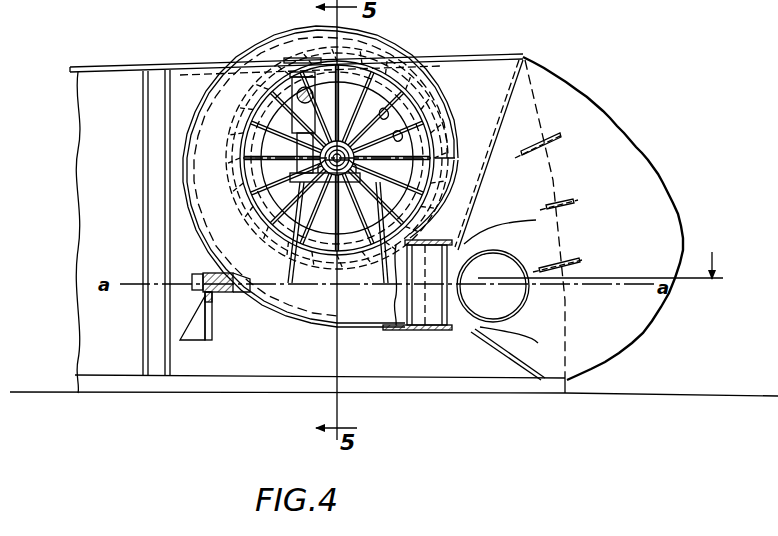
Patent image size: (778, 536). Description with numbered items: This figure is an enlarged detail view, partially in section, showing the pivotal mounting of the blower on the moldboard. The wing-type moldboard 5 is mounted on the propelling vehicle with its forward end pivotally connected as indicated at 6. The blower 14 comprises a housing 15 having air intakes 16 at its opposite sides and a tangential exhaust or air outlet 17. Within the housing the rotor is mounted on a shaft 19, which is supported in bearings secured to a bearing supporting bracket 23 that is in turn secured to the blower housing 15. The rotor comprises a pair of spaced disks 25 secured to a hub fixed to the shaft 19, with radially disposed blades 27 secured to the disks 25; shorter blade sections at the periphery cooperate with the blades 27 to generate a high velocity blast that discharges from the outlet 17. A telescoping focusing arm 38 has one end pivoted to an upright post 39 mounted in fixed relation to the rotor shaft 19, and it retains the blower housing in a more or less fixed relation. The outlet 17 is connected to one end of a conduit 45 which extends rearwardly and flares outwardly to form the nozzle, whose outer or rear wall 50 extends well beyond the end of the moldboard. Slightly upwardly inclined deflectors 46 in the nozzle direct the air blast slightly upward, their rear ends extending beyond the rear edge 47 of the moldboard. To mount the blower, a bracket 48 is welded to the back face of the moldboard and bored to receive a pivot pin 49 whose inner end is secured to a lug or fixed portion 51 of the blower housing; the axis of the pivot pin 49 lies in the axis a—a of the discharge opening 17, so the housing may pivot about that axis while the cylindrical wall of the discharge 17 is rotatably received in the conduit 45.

The wing-type moldboard 5 is at (103, 146).
The pivotal connection 6 is at (545, 269).
The blower 14 is at (398, 36).
The blower housing 15 is at (222, 102).
The air intakes 16 is at (385, 117).
The tangential exhaust or air outlet 17 is at (400, 320).
The shaft 19 is at (323, 160).
The bearing supporting bracket 23 is at (322, 190).
The spaced disks 25 is at (292, 217).
The radially disposed blades 27 is at (402, 140).
The telescoping focusing arm 38 is at (298, 90).
The upright post 39 is at (297, 152).
The conduit 45 is at (452, 330).
The deflectors 46 is at (570, 198).
The rear edge of the moldboard 47 is at (568, 318).
The bracket 48 is at (208, 312).
The pivot pin 49 is at (197, 272).
The outer or rear wall of the nozzle 50 is at (662, 204).
The lug or fixed portion of the blower housing 51 is at (231, 296).